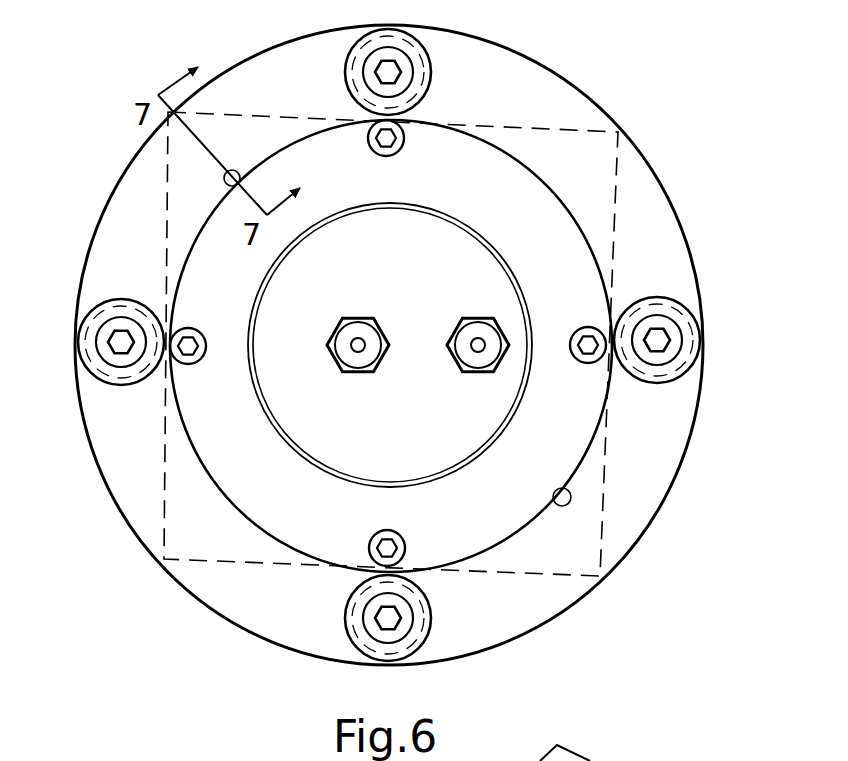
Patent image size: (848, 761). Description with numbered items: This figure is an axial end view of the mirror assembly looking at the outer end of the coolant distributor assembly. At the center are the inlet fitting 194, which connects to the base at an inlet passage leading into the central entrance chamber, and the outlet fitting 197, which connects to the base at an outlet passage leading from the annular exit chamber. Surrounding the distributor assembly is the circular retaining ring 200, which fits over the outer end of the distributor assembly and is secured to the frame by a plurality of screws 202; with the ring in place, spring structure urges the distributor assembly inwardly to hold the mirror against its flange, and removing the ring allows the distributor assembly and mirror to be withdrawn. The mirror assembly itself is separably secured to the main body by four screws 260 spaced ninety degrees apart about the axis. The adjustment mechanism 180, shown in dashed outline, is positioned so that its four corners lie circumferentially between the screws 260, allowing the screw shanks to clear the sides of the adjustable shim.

The adjustment mechanism 180 is at (543, 127).
The retaining ring 200 is at (553, 233).
The screws 202 is at (400, 152).
The screws 260 is at (410, 60).
The inlet fitting 194 is at (377, 320).
The outlet fitting 197 is at (467, 358).